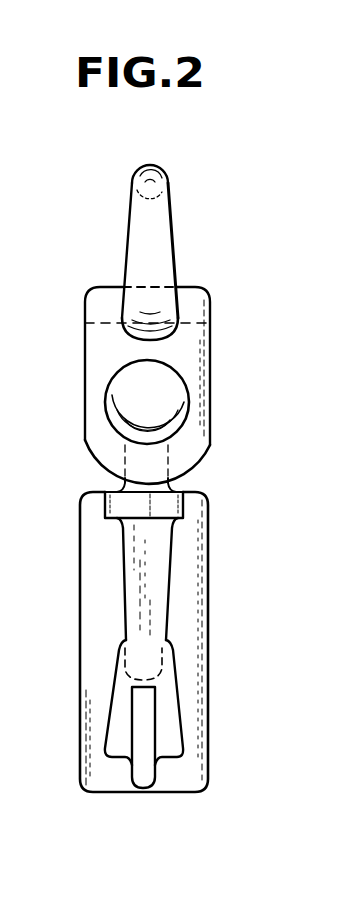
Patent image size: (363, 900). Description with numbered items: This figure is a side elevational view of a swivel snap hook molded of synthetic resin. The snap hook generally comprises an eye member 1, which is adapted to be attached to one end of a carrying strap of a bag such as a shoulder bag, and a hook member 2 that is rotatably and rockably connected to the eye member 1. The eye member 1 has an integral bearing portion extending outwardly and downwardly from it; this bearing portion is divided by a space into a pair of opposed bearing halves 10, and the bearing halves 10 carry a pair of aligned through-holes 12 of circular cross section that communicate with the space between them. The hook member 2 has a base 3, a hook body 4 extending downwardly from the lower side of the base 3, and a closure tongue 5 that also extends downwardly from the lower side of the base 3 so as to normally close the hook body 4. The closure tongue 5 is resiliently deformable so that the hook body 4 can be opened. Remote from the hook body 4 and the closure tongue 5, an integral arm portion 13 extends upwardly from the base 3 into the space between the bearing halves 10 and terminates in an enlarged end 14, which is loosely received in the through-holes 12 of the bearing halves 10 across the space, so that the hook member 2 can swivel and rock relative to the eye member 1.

The eye member 1 is at (175, 199).
The hook member 2 is at (217, 592).
The base 3 is at (108, 508).
The hook body 4 is at (138, 762).
The closure tongue 5 is at (130, 575).
The bearing half 10 is at (92, 425).
The through-hole 12 is at (107, 383).
The arm portion 13 is at (173, 486).
The enlarged end 14 is at (173, 400).